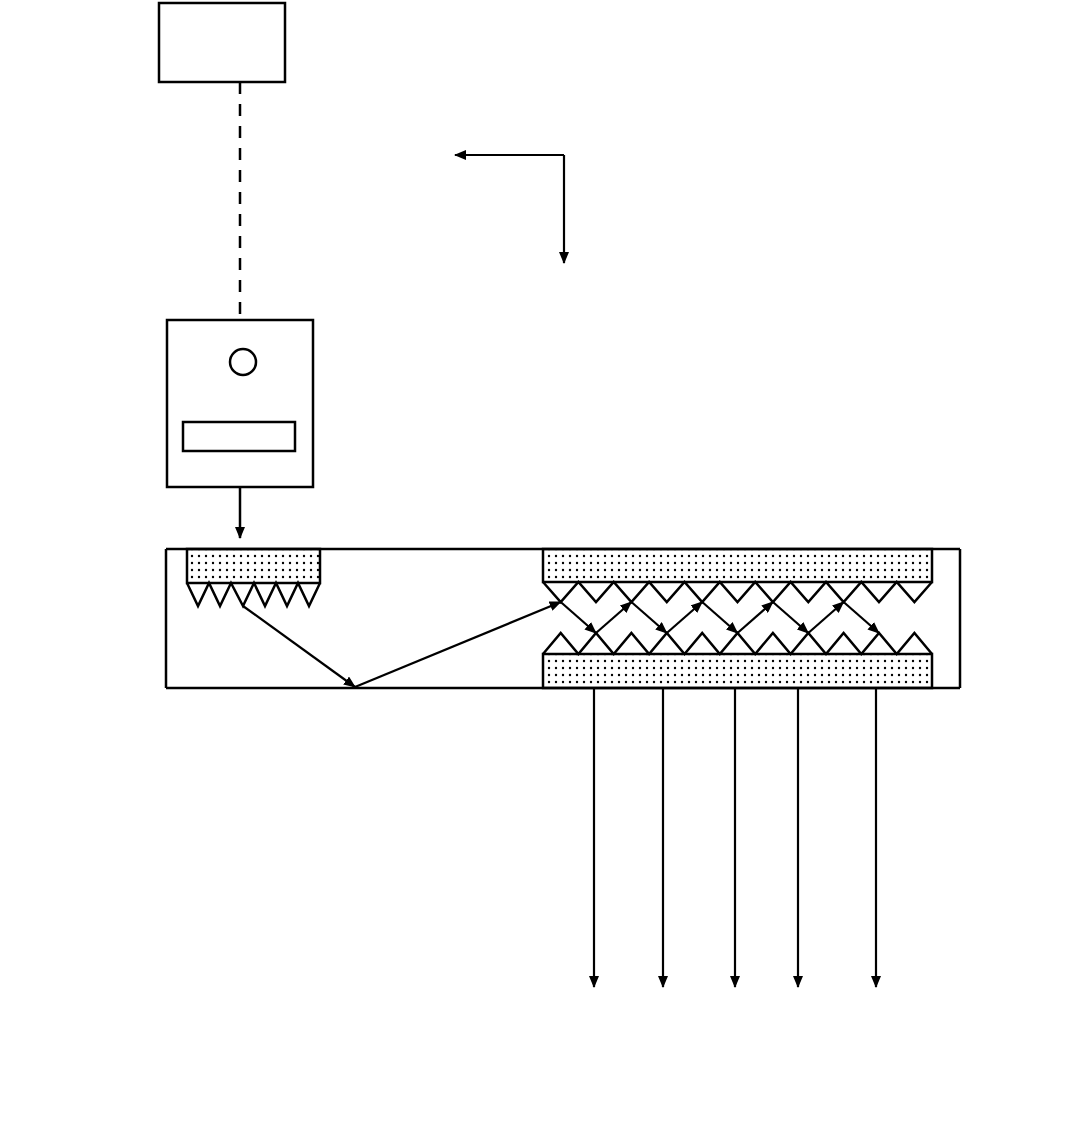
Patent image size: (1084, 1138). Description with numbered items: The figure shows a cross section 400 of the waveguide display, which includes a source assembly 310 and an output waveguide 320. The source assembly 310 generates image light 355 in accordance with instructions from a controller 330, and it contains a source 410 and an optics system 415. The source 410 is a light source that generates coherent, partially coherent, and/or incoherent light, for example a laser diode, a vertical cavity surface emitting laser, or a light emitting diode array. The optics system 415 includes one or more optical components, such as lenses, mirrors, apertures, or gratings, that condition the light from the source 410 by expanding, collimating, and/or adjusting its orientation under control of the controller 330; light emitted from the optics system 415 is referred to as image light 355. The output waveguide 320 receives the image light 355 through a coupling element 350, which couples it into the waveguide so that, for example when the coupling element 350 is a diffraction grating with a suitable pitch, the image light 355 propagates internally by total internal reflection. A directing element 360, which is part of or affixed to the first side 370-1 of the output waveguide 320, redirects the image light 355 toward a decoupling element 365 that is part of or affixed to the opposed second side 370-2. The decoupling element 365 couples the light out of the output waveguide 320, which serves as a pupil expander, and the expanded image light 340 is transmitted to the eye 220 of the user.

The cross section 400 is at (798, 130).
The controller 330 is at (222, 42).
The source assembly 310 is at (167, 335).
The source 410 is at (253, 350).
The optics system 415 is at (295, 430).
The image light 355 is at (240, 520).
The coupling element 350 is at (187, 566).
The output waveguide 320 is at (504, 624).
The first side 370-1 is at (497, 548).
The second side 370-2 is at (237, 688).
The directing element 360 is at (745, 562).
The decoupling element 365 is at (575, 680).
The expanded image light 340 is at (594, 888).
The eye 220 is at (753, 1058).